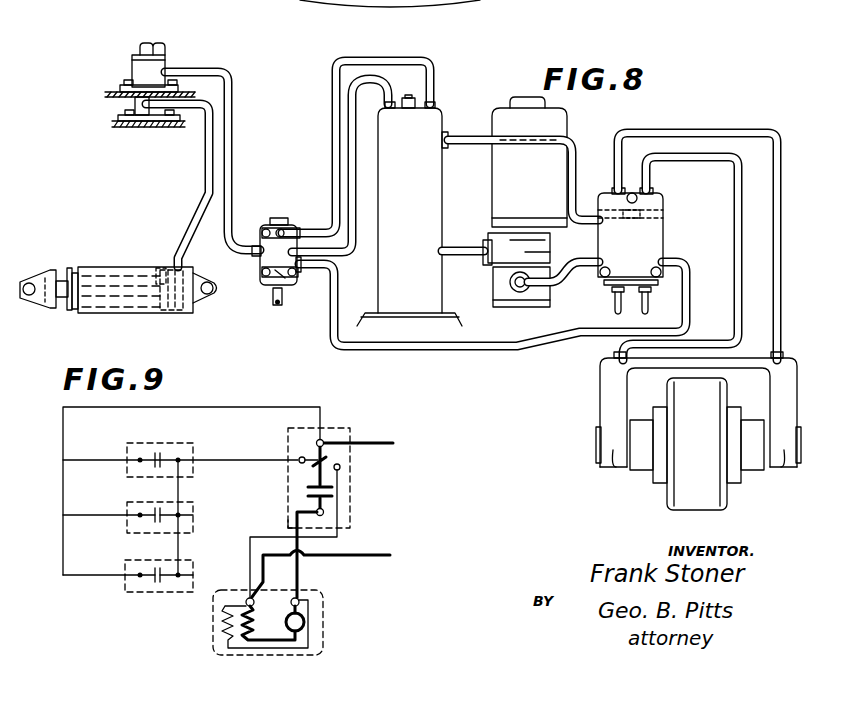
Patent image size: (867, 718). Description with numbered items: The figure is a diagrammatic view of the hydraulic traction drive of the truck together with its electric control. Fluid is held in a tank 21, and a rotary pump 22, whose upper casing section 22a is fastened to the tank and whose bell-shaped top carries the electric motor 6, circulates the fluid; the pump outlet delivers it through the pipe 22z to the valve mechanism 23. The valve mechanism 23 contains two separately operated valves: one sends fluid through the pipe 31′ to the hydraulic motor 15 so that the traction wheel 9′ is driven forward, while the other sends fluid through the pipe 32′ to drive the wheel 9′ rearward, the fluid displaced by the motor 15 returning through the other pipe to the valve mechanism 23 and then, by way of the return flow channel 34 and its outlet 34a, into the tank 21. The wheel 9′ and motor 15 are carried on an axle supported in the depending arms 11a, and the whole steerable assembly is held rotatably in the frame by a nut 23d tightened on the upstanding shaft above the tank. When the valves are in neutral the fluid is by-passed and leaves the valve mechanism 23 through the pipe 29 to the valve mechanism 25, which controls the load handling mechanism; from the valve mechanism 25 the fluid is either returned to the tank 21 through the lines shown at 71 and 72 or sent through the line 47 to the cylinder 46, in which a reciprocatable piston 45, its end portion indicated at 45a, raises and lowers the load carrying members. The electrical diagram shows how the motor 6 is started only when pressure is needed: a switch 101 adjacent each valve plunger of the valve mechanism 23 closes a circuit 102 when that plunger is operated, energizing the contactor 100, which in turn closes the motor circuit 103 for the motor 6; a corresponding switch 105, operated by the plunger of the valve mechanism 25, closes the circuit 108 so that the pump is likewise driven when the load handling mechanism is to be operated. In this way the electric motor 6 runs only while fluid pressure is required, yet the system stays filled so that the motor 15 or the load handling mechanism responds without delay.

In FIG. 8, the nut 23d is at (162, 50).
In FIG. 8, the hydraulic pipe 47 is at (206, 67).
In FIG. 8, the cylinder 46 is at (117, 276).
In FIG. 8, the piston 45 is at (137, 298).
In FIG. 8, the piston rod end 45a is at (158, 268).
In FIG. 8, the valve mechanism 25 is at (260, 264).
In FIG. 8, the pipe 71 is at (332, 137).
In FIG. 8, the pipe 72 is at (357, 196).
In FIG. 8, the pipe 29 is at (339, 280).
In FIG. 8, the tank 21 is at (443, 205).
In FIG. 8, the return flow channel 34 is at (458, 136).
In FIG. 8, the electric motor 6 is at (492, 166).
In FIG. 9, the electric motor 6 is at (320, 619).
In FIG. 8, the upper section 22a is at (468, 258).
In FIG. 8, the rotary pump 22 is at (506, 297).
In FIG. 8, the pipe 22z is at (578, 281).
In FIG. 8, the valve mechanism 23 is at (664, 235).
In FIG. 8, the outlet 34a is at (664, 211).
In FIG. 8, the pipe 32′ is at (743, 242).
In FIG. 8, the pipe 31′ is at (780, 242).
In FIG. 8, the arms 11a is at (600, 405).
In FIG. 8, the hydraulic rotary motor 15 is at (661, 460).
In FIG. 8, the wheel 9′ is at (722, 503).
In FIG. 9, the circuit 108 is at (98, 460).
In FIG. 9, the switch 105 is at (162, 452).
In FIG. 9, the switch 101 is at (163, 508).
In FIG. 9, the circuit 102 is at (98, 516).
In FIG. 9, the contactor 100 is at (352, 458).
In FIG. 9, the motor circuit 103 is at (388, 555).